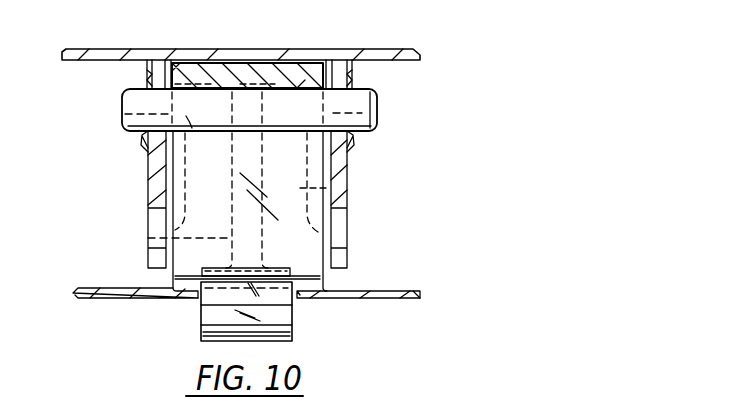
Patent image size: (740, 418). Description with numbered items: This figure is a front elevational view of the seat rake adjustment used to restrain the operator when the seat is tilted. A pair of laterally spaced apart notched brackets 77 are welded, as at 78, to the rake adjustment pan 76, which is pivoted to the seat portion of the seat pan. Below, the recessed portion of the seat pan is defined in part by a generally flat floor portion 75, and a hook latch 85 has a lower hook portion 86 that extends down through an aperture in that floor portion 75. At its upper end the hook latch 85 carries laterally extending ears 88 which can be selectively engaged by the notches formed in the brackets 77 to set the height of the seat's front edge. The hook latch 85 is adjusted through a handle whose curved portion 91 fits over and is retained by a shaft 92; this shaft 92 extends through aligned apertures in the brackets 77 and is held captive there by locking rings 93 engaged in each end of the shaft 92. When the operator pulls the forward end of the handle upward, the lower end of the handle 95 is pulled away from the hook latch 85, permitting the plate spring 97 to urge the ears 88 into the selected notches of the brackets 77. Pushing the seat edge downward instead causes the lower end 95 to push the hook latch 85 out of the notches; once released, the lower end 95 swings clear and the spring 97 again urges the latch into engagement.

The floor portion 75 is at (400, 291).
The rake adjustment pan 76 is at (385, 52).
The notched brackets 77 is at (148, 193).
The weld 78 is at (145, 67).
The hook latch 85 is at (330, 188).
The lower hook portion 86 is at (283, 320).
The laterally extending ears 88 is at (125, 118).
The curved portion 91 is at (213, 64).
The shaft 92 is at (375, 125).
The locking rings 93 is at (350, 152).
The lower end of the handle 95 is at (330, 258).
The plate spring 97 is at (148, 238).